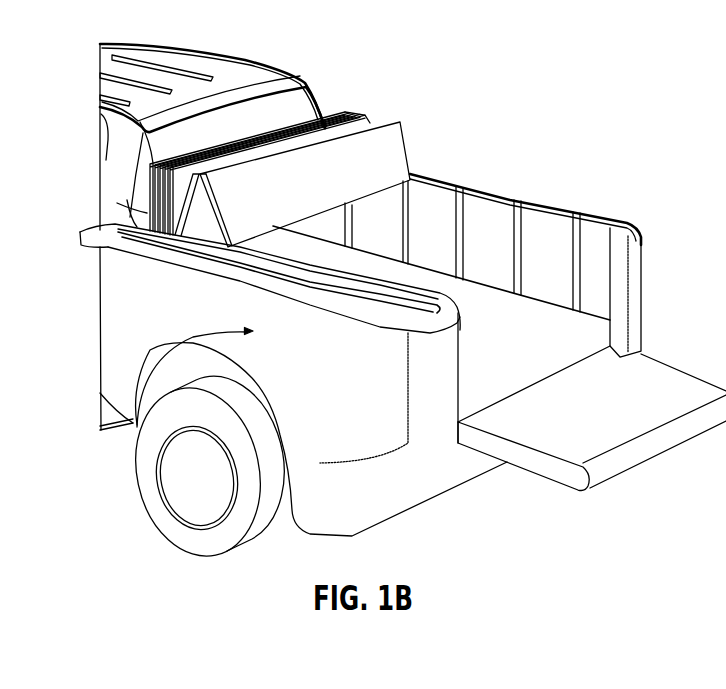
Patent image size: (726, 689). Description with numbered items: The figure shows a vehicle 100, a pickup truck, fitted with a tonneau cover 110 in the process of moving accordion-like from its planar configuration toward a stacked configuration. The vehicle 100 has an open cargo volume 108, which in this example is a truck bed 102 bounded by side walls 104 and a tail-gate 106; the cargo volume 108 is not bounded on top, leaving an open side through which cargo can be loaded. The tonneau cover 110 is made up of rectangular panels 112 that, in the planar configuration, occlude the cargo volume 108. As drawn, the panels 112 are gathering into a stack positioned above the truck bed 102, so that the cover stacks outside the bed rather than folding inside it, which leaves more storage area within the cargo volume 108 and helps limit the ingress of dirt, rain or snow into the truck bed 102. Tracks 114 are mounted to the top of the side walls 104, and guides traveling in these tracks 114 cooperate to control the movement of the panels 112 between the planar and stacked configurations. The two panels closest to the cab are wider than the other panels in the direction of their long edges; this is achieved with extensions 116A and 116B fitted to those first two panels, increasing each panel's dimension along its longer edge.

The vehicle 100 is at (620, 38).
The truck bed 102 is at (137, 405).
The side walls 104 is at (590, 237).
The tail-gate 106 is at (678, 388).
The cargo volume 108 is at (492, 305).
The tonneau cover 110 is at (310, 116).
The rectangular panels 112 is at (395, 139).
The tracks 114 is at (490, 190).
The extension 116A is at (157, 188).
The extension 116B is at (152, 176).